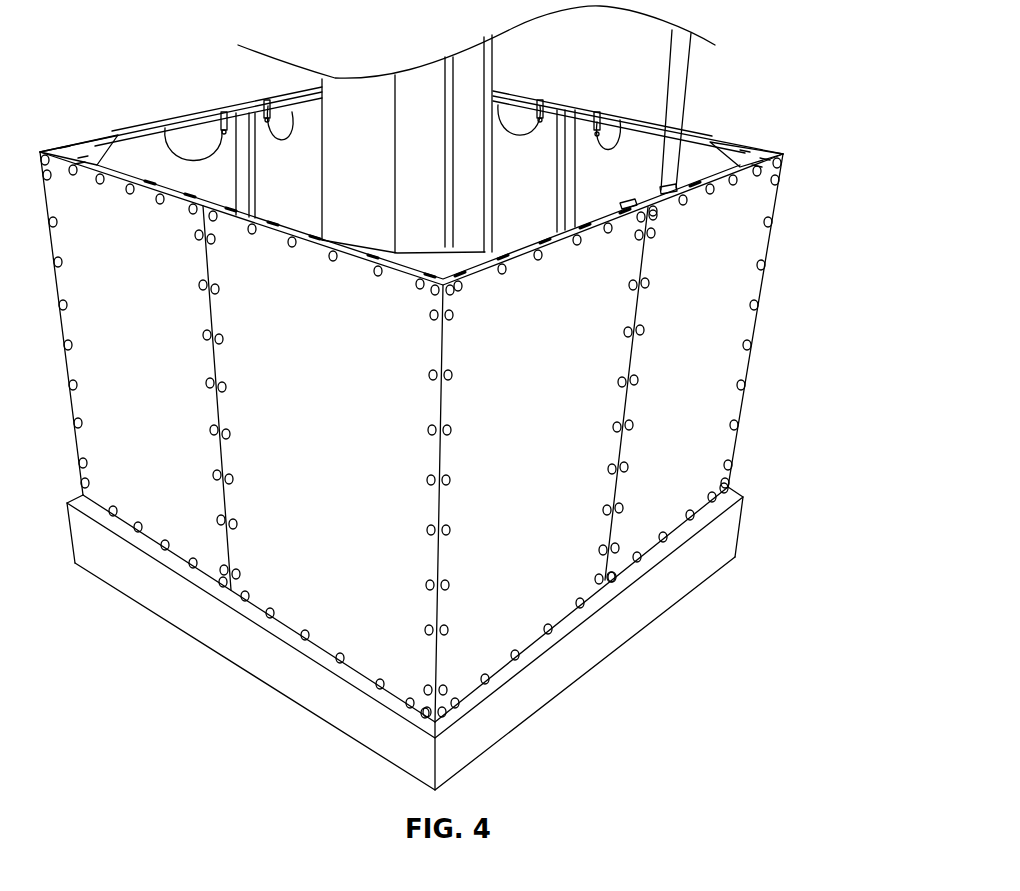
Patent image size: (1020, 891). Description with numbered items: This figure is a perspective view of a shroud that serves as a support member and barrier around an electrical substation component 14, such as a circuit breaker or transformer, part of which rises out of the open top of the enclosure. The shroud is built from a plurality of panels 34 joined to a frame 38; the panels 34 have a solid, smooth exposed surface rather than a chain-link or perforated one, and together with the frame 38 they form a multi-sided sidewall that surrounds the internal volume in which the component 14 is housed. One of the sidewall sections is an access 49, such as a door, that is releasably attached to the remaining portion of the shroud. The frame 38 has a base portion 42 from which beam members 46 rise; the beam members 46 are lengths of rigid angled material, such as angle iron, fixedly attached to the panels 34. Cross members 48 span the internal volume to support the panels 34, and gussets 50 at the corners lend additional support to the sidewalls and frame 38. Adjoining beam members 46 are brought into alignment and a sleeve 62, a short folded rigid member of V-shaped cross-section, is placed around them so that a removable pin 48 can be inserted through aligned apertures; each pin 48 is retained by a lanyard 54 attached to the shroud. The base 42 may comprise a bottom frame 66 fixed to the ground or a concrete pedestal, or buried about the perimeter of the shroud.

The substation component 14 is at (493, 50).
The panel 34 is at (351, 426).
The frame 38 is at (253, 173).
The base portion 42 is at (722, 542).
The beam member 46 is at (145, 128).
The cross member / removable pin 48 is at (222, 112).
The access 49 is at (147, 366).
The gusset 50 is at (97, 150).
The lanyard 54 is at (292, 128).
The sleeve 62 is at (247, 102).
The bottom frame 66 is at (488, 725).